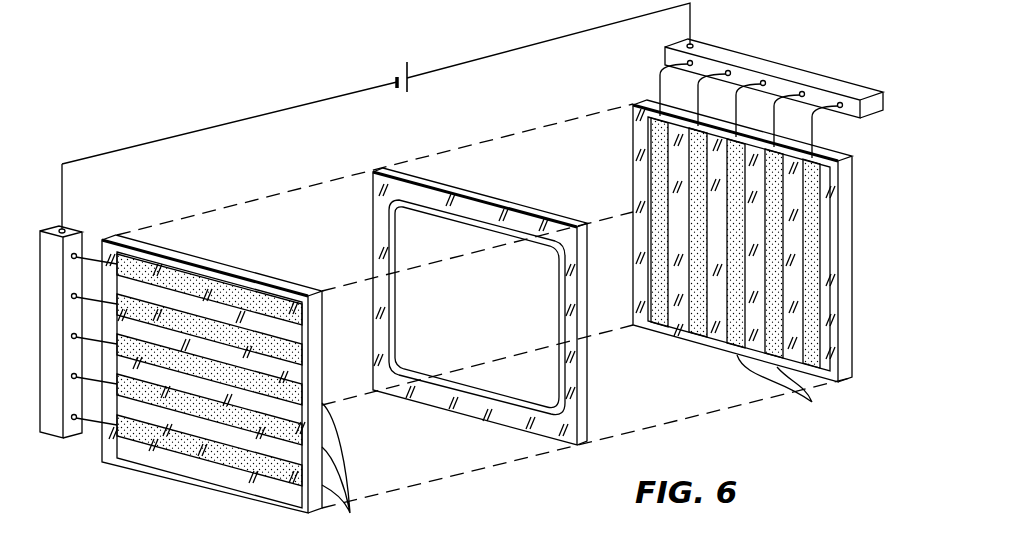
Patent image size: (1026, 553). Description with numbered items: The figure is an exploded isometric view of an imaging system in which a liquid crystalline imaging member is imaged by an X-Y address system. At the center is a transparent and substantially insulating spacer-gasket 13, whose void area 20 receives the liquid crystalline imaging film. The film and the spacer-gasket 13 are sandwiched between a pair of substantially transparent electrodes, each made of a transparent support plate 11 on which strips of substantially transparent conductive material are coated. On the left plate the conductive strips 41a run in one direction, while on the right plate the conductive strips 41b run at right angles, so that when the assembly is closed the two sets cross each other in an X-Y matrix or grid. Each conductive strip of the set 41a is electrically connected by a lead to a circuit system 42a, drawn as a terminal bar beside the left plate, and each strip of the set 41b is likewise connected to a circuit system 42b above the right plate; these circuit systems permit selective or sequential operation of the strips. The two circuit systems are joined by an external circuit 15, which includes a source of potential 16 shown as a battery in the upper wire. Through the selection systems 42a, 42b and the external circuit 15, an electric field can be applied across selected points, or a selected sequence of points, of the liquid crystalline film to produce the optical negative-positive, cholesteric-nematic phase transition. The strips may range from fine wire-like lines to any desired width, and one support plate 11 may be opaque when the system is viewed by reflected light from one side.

The transparent support plate 11 is at (116, 238).
The spacer-gasket 13 is at (377, 171).
The void area 20 is at (512, 383).
The external circuit 15 is at (386, 63).
The source of potential 16 is at (396, 89).
The conductive strips 41a is at (352, 469).
The conductive strips 41b is at (787, 388).
The circuit system 42a is at (70, 438).
The circuit system 42b is at (701, 47).